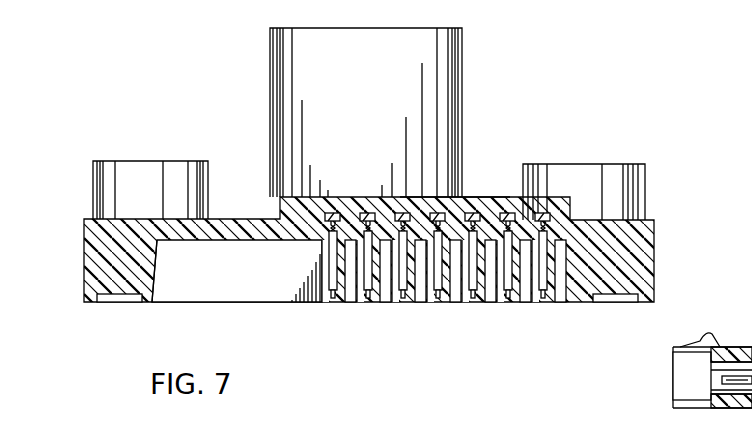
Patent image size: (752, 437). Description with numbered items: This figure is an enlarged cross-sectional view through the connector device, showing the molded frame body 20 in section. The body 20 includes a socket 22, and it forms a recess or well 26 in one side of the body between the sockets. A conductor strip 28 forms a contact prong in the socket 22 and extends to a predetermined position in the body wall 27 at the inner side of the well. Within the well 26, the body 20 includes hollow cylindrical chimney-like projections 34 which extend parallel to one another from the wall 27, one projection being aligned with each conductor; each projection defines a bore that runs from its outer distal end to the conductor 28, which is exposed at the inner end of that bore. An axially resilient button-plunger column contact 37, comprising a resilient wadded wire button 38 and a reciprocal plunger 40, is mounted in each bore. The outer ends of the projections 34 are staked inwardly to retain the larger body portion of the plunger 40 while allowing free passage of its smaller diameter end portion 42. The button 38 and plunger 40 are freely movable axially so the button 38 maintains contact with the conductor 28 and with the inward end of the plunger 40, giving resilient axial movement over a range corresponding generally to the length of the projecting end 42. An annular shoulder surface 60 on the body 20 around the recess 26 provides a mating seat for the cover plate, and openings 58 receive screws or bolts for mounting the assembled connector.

The frame body 20 is at (374, 262).
The socket 22 is at (458, 82).
The well 26 is at (268, 302).
The body wall 27 is at (192, 242).
The conductor strip 28 is at (472, 197).
The hollow cylindrical chimney-like projection 34 is at (533, 296).
The axially resilient button-plunger column contact 37 is at (500, 296).
The resilient wadded wire button 38 is at (328, 214).
The reciprocal plunger 40 is at (462, 292).
The smaller diameter end portion 42 is at (410, 292).
The opening 58 is at (93, 185).
The annular shoulder surface 60 is at (120, 302).